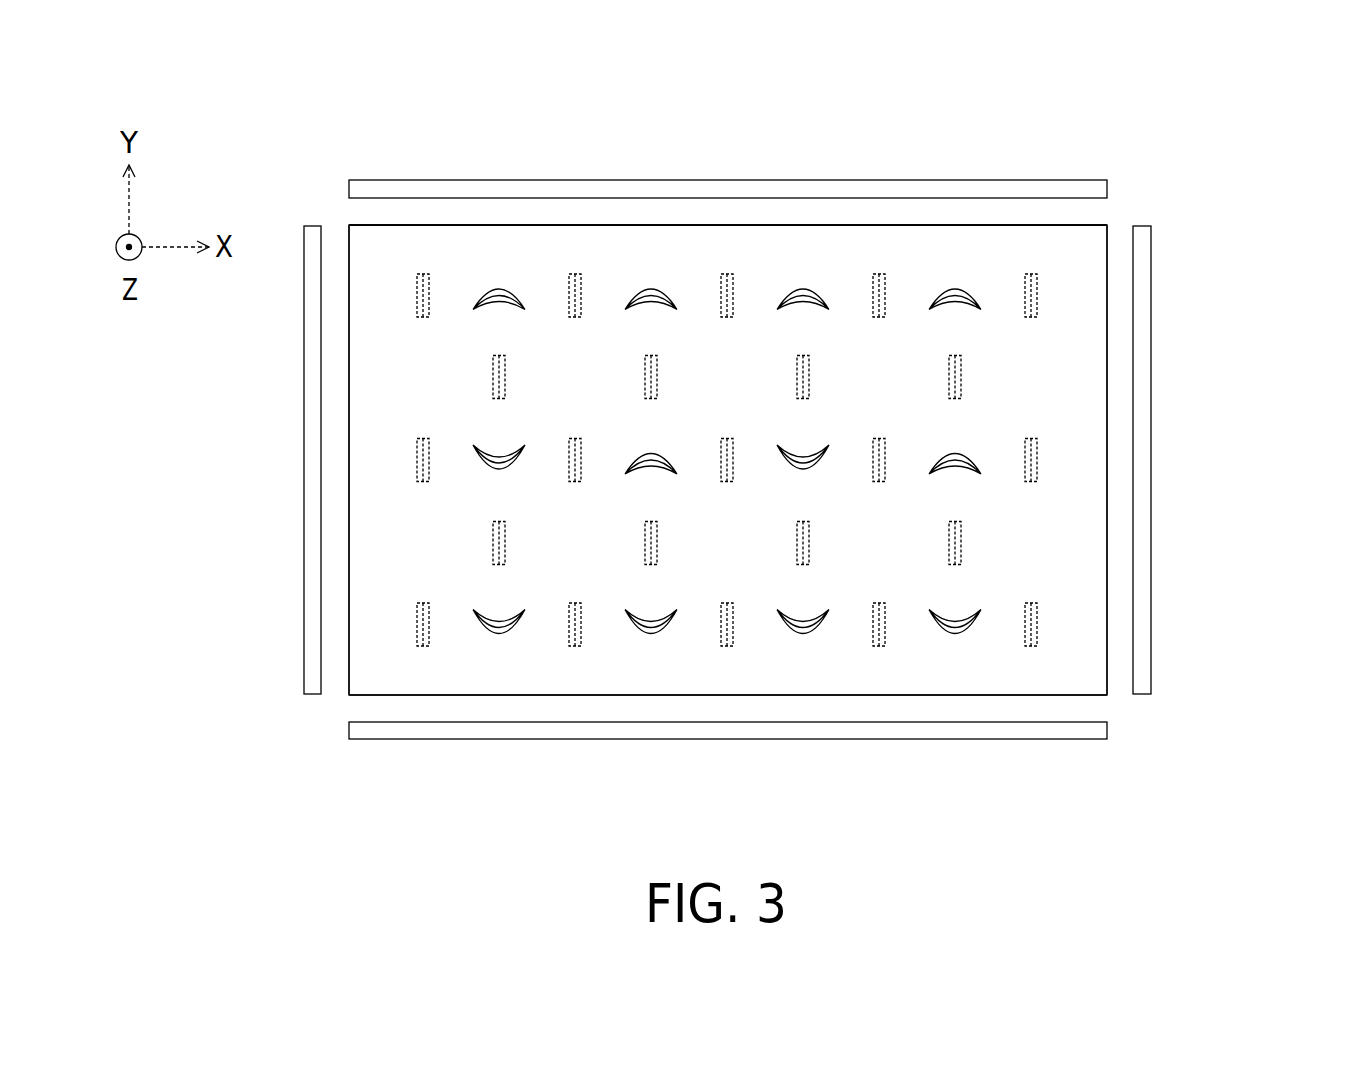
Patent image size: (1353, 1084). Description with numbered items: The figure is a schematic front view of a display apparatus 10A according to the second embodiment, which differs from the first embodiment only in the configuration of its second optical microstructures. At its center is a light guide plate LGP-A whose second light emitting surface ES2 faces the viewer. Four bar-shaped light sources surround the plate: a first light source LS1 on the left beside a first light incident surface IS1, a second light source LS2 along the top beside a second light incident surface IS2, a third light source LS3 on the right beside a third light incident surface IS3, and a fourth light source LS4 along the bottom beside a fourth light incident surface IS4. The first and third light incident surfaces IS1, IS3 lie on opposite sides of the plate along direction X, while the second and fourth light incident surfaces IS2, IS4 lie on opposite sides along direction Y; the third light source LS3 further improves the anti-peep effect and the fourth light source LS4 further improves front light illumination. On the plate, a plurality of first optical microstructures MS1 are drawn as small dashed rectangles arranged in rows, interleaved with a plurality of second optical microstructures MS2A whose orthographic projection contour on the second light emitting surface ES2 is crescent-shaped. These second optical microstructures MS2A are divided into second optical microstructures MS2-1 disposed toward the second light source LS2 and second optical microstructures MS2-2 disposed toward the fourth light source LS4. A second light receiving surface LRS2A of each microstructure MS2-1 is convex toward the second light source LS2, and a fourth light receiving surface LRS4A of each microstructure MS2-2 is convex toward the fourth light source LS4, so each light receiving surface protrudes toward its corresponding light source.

The display apparatus 10A is at (1285, 824).
The light guide plate LGP-A is at (1086, 680).
The first light source LS1 is at (316, 337).
The second light source LS2 is at (652, 190).
The third light source LS3 is at (1143, 364).
The fourth light source LS4 is at (652, 730).
The first light incident surface IS1 is at (349, 565).
The second light incident surface IS2 is at (850, 225).
The third light incident surface IS3 is at (1107, 565).
The fourth light incident surface IS4 is at (851, 695).
The second light emitting surface ES2 is at (368, 243).
The first optical microstructures MS1 is at (1037, 292).
The second optical microstructures MS2A is at (599, 356).
The second optical microstructures MS2-1 is at (955, 288).
The second optical microstructures MS2-2 is at (477, 448).
The second light receiving surface LRS2A is at (802, 290).
The fourth light receiving surface LRS4A is at (497, 633).